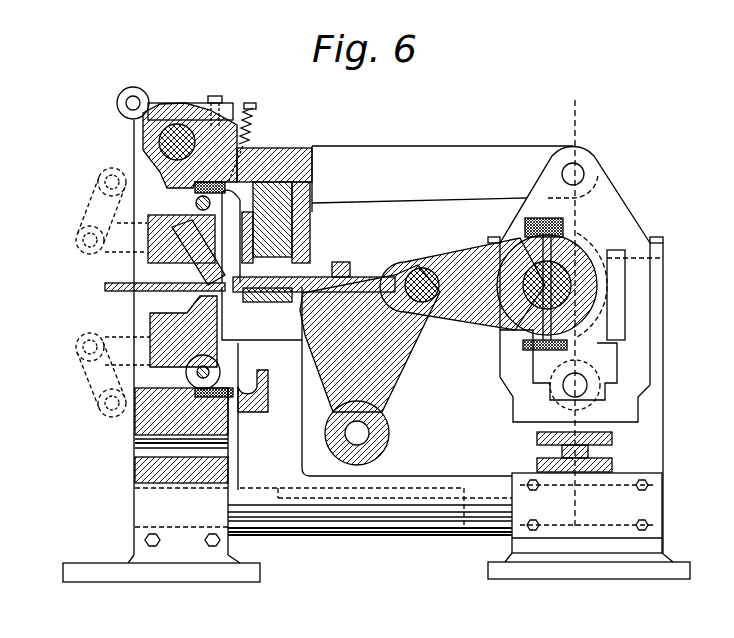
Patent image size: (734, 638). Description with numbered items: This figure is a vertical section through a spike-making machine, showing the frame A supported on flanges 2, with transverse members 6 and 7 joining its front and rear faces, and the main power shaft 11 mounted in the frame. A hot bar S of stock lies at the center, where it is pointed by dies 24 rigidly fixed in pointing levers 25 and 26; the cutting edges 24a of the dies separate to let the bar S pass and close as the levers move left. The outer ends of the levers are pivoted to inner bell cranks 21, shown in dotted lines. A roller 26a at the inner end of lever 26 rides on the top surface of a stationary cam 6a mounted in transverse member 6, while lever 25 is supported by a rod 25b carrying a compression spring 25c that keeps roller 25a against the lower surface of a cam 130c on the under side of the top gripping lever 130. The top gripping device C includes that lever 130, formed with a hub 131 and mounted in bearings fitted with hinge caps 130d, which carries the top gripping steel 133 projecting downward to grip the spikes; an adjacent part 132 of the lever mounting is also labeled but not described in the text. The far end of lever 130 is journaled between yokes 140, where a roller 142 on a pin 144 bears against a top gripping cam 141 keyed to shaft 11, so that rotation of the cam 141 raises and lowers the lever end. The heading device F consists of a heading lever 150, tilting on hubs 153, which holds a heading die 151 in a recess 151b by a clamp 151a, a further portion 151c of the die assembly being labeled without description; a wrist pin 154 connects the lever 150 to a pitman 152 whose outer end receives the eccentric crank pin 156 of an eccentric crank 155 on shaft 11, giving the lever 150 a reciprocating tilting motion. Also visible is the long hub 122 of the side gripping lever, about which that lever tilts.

The flanges 2 is at (253, 574).
The transverse member 6 is at (143, 425).
The stationary cam 6a is at (238, 405).
The transverse member 7 is at (612, 466).
The main power shaft 11 is at (497, 399).
The inner bell cranks 21 is at (76, 241).
The dies 24 is at (150, 284).
The cutting edges 24a is at (200, 296).
The pointing lever 25 is at (157, 220).
The roller 25a is at (196, 203).
The rod 25b is at (254, 111).
The compression spring 25c is at (252, 134).
The pointing lever 26 is at (157, 330).
The roller 26a is at (222, 369).
The long hub 122 is at (370, 527).
The top gripping lever 130 is at (456, 146).
The cam 130c is at (268, 170).
The hinge caps 130d is at (228, 110).
The hub 131 is at (148, 145).
The lever 132 is at (180, 132).
The top gripping steel 133 is at (277, 197).
The yoke 140 is at (622, 220).
The top gripping cam 141 is at (597, 345).
The roller 142 is at (548, 391).
The pin 144 is at (586, 384).
The heading lever 150 is at (360, 378).
The die 151 is at (305, 281).
The clamp 151a is at (350, 268).
The recess 151b is at (252, 340).
The bar end 151c is at (293, 305).
The pitman 152 is at (446, 266).
The hubs 153 is at (382, 440).
The wrist pin 154 is at (426, 302).
The eccentric crank 155 is at (600, 312).
The eccentric crank pin 156 is at (527, 296).
The hot bar S is at (105, 287).
The top gripping device C is at (320, 142).
The heading device F is at (410, 345).
The frame A is at (675, 412).